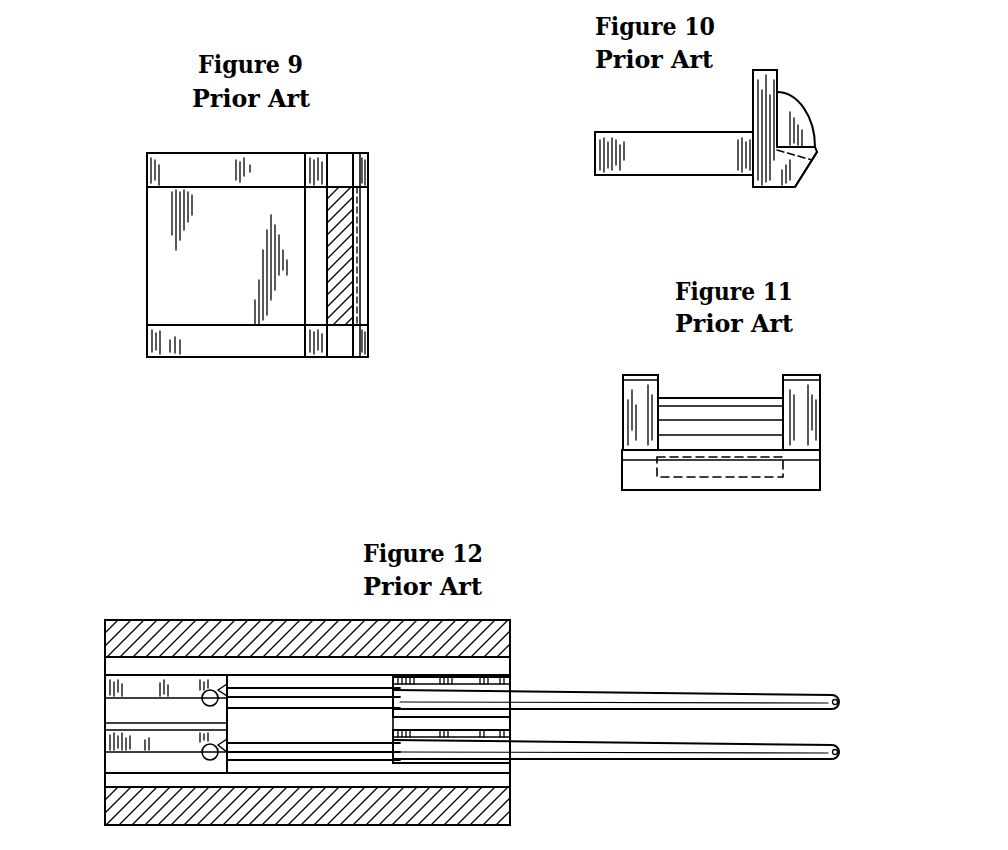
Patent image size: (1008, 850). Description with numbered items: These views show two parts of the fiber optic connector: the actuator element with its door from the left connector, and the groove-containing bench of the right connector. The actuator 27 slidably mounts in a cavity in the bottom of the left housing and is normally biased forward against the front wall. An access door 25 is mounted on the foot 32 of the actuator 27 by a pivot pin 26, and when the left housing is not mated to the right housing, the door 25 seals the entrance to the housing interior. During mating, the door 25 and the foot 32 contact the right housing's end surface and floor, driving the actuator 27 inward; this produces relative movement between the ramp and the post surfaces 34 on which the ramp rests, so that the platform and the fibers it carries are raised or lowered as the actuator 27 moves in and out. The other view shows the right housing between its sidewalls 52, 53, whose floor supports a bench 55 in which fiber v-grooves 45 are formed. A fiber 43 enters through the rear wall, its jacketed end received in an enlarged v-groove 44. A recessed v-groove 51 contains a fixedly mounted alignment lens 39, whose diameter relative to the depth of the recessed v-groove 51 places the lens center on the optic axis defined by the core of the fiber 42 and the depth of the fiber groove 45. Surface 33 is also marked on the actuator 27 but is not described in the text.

In FIG. 10, the access door 25 is at (795, 108).
In FIG. 11, the access door 25 is at (713, 407).
In FIG. 9, the pivot pin 26 is at (361, 153).
In FIG. 10, the pivot pin 26 is at (808, 157).
In FIG. 9, the actuator 27 is at (237, 357).
In FIG. 10, the actuator 27 is at (700, 178).
In FIG. 11, the actuator 27 is at (742, 491).
In FIG. 10, the foot 32 is at (801, 179).
In FIG. 10, the wall surface 33 is at (753, 112).
In FIG. 9, the post surfaces 34 is at (313, 153).
In FIG. 10, the post surfaces 34 is at (762, 70).
In FIG. 11, the post surfaces 34 is at (640, 375).
In FIG. 12, the alignment lens 39 is at (218, 690).
In FIG. 12, the fiber 42 is at (278, 692).
In FIG. 12, the fiber 43 is at (570, 692).
In FIG. 12, the enlarged v-groove 44 is at (398, 764).
In FIG. 12, the fiber v-grooves 45 is at (352, 742).
In FIG. 12, the recessed v-groove 51 is at (110, 712).
In FIG. 12, the sidewall 52 is at (377, 657).
In FIG. 12, the sidewall 53 is at (232, 787).
In FIG. 12, the bench 55 is at (115, 665).